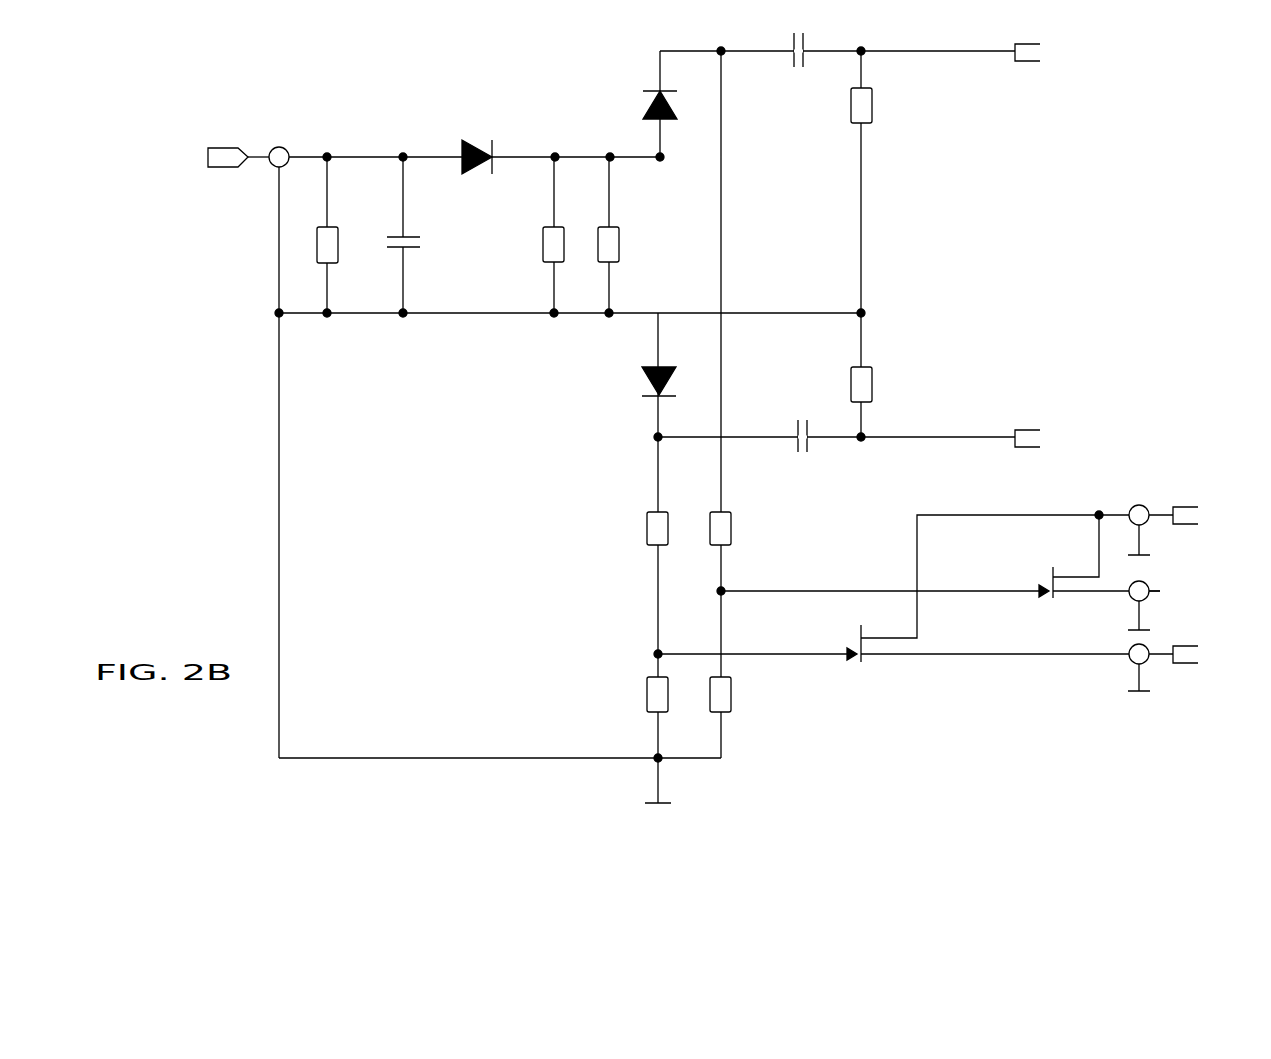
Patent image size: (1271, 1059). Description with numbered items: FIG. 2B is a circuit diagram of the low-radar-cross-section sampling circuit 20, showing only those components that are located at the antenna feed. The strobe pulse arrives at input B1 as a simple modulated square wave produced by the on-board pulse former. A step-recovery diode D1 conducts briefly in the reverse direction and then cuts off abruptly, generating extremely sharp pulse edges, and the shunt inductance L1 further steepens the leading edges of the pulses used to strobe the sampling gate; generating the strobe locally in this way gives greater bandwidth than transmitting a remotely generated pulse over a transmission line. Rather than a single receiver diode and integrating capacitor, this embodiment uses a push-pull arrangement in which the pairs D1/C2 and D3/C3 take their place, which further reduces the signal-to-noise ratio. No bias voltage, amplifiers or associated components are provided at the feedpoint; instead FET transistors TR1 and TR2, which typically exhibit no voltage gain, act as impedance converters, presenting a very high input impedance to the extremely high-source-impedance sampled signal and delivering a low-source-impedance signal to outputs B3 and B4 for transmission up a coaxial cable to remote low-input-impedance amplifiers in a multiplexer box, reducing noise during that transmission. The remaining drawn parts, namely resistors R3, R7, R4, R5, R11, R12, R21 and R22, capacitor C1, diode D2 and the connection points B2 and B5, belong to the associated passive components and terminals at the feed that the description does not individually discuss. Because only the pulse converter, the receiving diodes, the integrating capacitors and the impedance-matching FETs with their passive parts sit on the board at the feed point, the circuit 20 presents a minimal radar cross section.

The sampling circuit 20 is at (428, 830).
The input B1 is at (226, 145).
The +12V terminal B2 is at (1221, 504).
The output B3 is at (1210, 644).
The output B4 is at (1198, 583).
The antenna terminal B5 is at (1064, 235).
The resistor R3 is at (344, 235).
The capacitor C1 is at (420, 235).
The step-recovery diode D1 is at (477, 167).
The shunt inductance L1 is at (568, 235).
The resistor R7 is at (625, 235).
The diode D2 is at (643, 104).
The capacitor C2 is at (797, 66).
The resistor R21 is at (888, 105).
The resistor R22 is at (888, 384).
The diode D3 is at (641, 382).
The capacitor C3 is at (804, 451).
The resistor R5 is at (638, 528).
The resistor R4 is at (739, 528).
The resistor R11 is at (635, 694).
The resistor R12 is at (746, 694).
The FET transistor TR1 is at (869, 660).
The FET transistor TR2 is at (1054, 598).